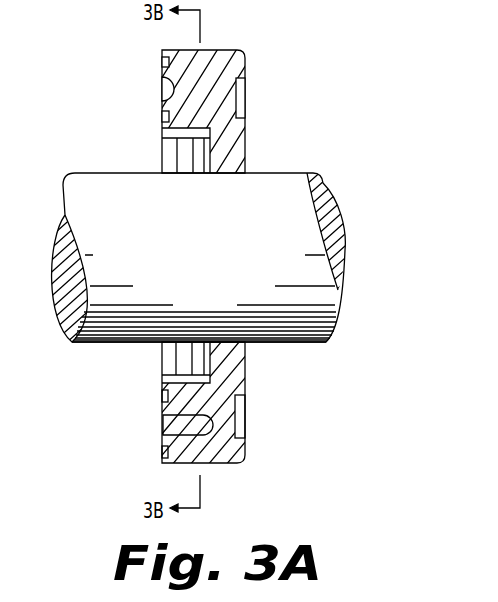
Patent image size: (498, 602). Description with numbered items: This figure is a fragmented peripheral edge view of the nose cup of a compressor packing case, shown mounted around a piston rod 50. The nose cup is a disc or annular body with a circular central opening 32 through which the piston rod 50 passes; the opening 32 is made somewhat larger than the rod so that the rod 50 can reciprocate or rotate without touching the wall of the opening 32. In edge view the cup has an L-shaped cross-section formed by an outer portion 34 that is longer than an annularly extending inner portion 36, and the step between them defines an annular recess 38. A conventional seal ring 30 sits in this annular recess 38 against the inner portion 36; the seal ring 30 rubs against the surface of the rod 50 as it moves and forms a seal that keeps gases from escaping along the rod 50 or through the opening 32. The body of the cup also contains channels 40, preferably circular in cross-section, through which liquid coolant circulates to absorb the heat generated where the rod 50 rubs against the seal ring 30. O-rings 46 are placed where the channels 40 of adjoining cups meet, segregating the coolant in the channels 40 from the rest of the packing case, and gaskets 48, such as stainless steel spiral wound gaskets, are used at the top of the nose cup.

The seal ring 30 is at (172, 153).
The opening 32 is at (248, 344).
The outer portion 34 is at (223, 445).
The inner portion 36 is at (240, 362).
The annular recess 38 is at (207, 132).
The channel 40 is at (164, 90).
The o-ring 46 is at (163, 61).
The gasket 48 is at (246, 88).
The piston rod 50 is at (342, 225).